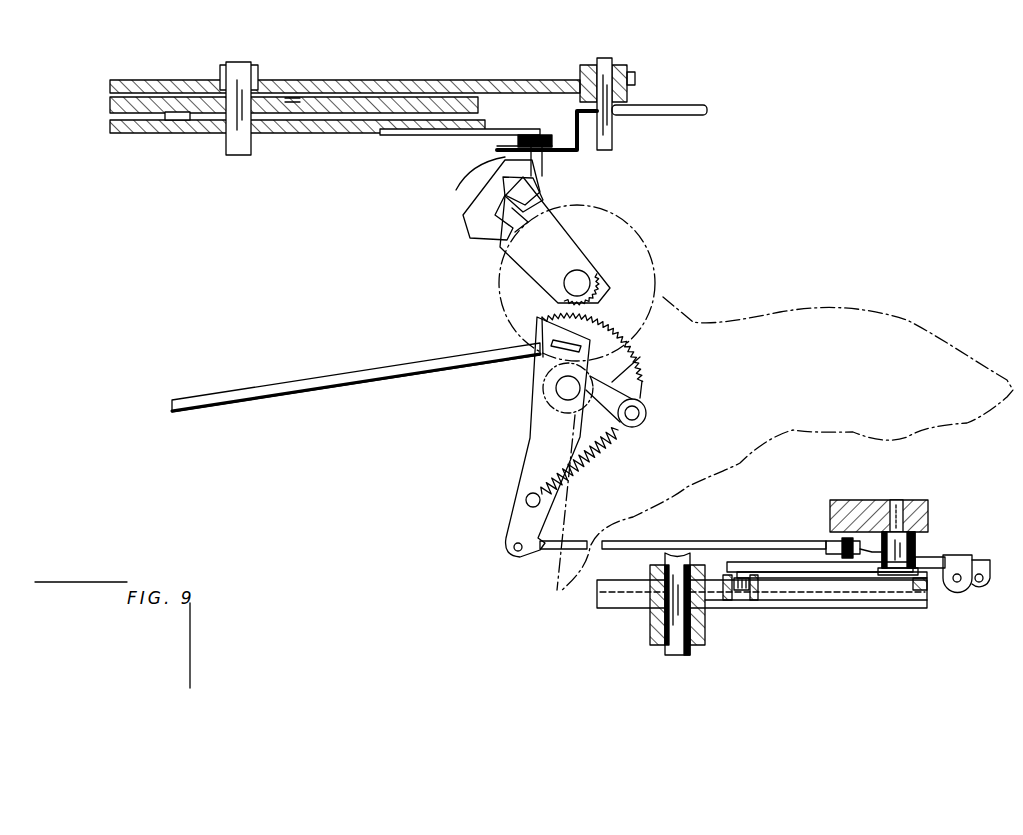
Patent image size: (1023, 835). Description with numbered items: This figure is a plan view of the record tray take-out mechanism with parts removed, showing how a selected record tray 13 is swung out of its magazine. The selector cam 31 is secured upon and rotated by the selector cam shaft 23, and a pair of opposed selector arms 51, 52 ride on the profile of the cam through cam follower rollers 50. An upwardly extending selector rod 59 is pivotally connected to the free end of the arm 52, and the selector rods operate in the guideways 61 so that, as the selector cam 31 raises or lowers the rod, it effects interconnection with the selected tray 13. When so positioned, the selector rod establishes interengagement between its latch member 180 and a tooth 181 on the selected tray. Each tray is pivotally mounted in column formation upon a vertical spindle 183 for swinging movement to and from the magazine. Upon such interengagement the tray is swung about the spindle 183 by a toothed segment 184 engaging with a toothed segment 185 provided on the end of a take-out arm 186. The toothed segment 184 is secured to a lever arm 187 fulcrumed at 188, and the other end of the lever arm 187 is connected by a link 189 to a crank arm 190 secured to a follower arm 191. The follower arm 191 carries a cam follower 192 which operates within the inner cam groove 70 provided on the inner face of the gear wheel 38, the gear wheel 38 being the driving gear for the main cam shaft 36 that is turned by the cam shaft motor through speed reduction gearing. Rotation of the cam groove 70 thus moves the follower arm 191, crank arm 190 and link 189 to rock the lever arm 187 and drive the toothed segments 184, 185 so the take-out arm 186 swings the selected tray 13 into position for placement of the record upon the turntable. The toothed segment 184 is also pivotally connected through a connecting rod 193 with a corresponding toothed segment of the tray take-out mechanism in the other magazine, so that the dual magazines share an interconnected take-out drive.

The swinging tray 13 is at (813, 337).
The selector cam shaft 23 is at (248, 156).
The selector cam 31 is at (112, 104).
The cam shaft 36 is at (677, 648).
The cam gear 38 is at (627, 600).
The cam follower roller 50 is at (178, 121).
The selector arm 51 is at (130, 129).
The selector arm 52 is at (465, 79).
The selector rod 59 is at (470, 178).
The guideway 61 is at (513, 155).
The camming groove 70 is at (763, 600).
The latch member 180 is at (522, 183).
The tooth 181 is at (520, 223).
The vertical spindle 183 is at (578, 283).
The toothed segment 184 is at (633, 337).
The toothed segment 185 is at (600, 290).
The take-out arm 186 is at (537, 258).
The lever arm 187 is at (540, 450).
The fulcrum 188 is at (568, 388).
The link 189 is at (617, 547).
The crank arm 190 is at (948, 558).
The follower arm 191 is at (980, 568).
The cam follower 192 is at (737, 605).
The connecting rod 193 is at (250, 400).